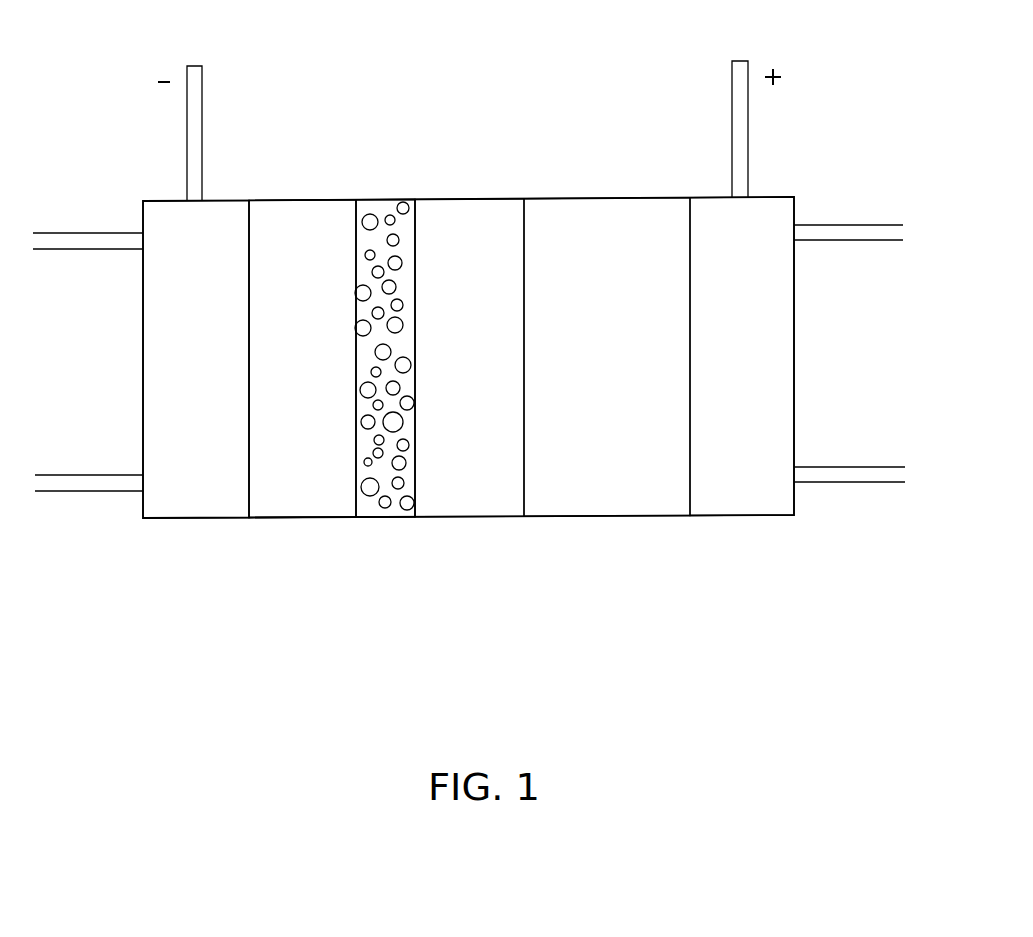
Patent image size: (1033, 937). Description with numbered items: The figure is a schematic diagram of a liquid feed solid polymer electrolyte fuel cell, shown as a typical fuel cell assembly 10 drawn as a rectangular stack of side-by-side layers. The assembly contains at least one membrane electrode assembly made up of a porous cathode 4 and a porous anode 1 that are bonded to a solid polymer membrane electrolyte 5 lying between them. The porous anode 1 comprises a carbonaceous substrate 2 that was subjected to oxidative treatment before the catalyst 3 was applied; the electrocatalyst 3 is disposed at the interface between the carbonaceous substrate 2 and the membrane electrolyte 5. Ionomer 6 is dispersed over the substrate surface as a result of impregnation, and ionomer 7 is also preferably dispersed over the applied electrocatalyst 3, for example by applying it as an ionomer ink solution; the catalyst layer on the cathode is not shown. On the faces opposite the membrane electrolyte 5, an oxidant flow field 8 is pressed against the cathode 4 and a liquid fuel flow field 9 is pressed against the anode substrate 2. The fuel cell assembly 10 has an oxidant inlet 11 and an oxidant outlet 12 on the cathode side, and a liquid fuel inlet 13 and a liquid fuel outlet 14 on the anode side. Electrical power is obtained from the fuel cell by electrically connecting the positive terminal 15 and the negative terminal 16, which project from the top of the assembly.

The porous anode 1 is at (252, 532).
The carbonaceous substrate 2 is at (280, 232).
The catalyst 3 is at (372, 487).
The porous cathode 4 is at (524, 530).
The solid polymer membrane electrolyte 5 is at (472, 485).
The ionomer 6 is at (326, 247).
The ionomer 7 is at (382, 207).
The oxidant flow field 8 is at (729, 485).
The liquid fuel flow field 9 is at (203, 492).
The fuel cell assembly 10 is at (822, 103).
The oxidant inlet 11 is at (855, 232).
The oxidant outlet 12 is at (860, 476).
The liquid fuel inlet 13 is at (87, 242).
The liquid fuel outlet 14 is at (90, 483).
The positive terminal 15 is at (740, 115).
The negative terminal 16 is at (195, 118).